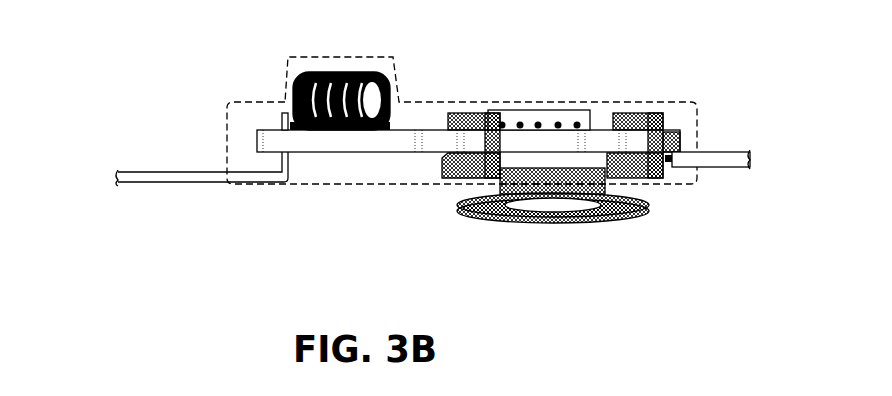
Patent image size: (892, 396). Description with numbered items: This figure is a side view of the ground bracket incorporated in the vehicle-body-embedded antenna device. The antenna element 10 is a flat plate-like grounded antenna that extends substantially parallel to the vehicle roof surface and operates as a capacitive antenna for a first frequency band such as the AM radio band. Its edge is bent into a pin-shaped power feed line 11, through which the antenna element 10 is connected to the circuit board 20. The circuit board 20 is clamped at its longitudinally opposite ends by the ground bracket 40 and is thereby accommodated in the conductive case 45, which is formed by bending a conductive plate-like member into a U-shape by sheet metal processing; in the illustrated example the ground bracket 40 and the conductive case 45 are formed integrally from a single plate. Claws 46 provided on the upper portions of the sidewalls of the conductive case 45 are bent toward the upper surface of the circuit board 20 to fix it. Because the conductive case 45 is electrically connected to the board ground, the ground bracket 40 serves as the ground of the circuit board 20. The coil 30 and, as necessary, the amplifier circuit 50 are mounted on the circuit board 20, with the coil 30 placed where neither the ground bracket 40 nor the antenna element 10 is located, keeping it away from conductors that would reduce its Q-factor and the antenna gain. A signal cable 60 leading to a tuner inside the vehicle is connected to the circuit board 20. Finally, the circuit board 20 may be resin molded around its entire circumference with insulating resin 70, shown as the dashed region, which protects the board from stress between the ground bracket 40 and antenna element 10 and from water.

The antenna element 10 is at (165, 178).
The power feed line 11 is at (283, 113).
The circuit board 20 is at (390, 142).
The coil 30 is at (341, 70).
The ground bracket 40 is at (625, 210).
The conductive case 45 is at (665, 173).
The claws 46 is at (452, 113).
The amplifier circuit 50 is at (563, 108).
The signal cable 60 is at (735, 157).
The insulating resin 70 is at (413, 93).